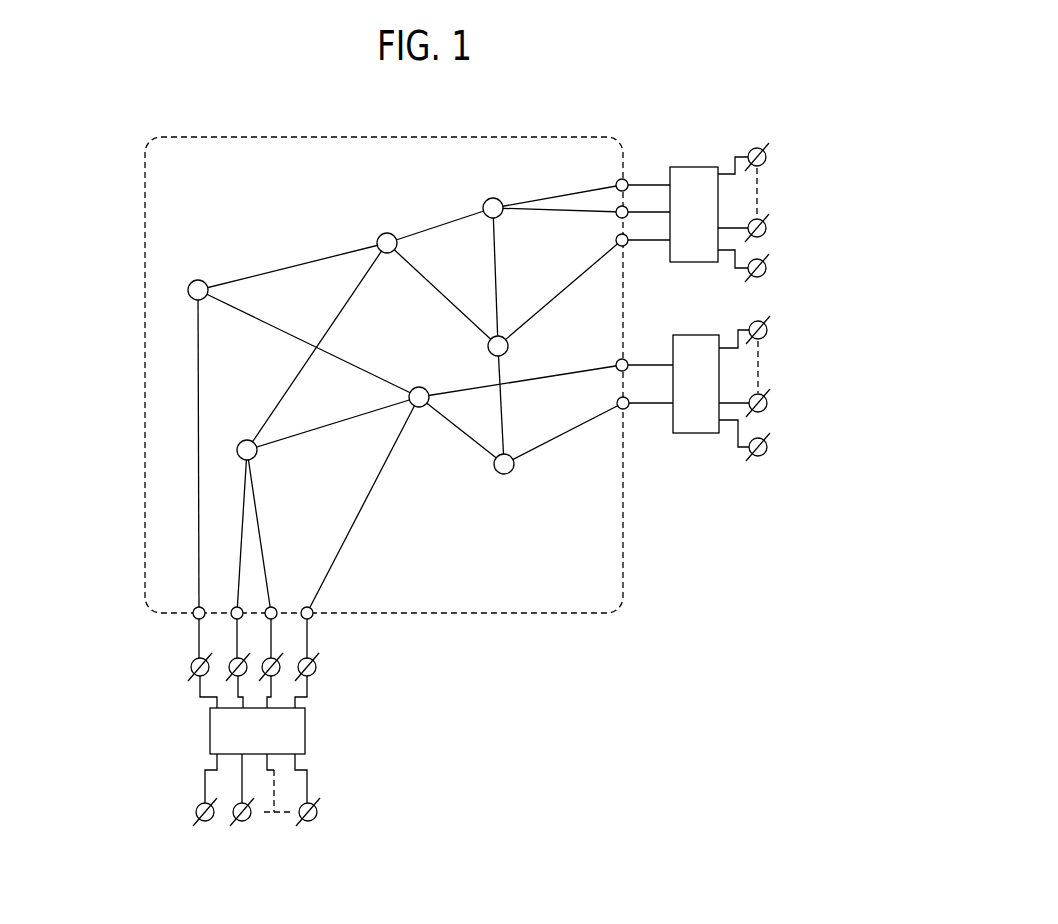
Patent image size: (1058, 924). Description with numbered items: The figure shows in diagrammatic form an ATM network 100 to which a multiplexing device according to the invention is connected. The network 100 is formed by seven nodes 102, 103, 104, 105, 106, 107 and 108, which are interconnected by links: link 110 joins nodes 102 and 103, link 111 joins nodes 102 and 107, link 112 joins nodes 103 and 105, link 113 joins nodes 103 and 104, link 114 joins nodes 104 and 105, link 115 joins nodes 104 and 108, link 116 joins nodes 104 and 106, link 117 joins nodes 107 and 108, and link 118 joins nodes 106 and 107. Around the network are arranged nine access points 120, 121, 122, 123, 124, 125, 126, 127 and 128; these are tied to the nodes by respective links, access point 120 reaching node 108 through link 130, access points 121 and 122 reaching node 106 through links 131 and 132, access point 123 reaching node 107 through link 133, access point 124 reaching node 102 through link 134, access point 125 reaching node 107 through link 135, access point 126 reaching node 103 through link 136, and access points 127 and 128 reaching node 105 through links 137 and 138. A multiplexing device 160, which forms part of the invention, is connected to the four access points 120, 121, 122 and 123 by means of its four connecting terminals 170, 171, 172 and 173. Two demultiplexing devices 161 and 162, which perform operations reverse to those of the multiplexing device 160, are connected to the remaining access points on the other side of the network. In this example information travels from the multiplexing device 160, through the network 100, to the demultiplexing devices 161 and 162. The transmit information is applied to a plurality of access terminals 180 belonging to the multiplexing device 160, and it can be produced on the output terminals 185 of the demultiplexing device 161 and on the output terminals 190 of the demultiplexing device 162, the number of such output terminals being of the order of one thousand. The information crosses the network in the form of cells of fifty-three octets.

The ATM network 100 is at (515, 613).
The node 102 is at (505, 474).
The node 103 is at (489, 348).
The node 104 is at (383, 235).
The node 105 is at (489, 200).
The node 106 is at (243, 441).
The node 107 is at (410, 392).
The node 108 is at (200, 281).
The link 110 is at (500, 411).
The link 111 is at (467, 437).
The link 112 is at (493, 277).
The link 113 is at (437, 291).
The link 114 is at (436, 227).
The link 115 is at (302, 264).
The link 116 is at (330, 330).
The link 117 is at (255, 320).
The link 118 is at (337, 425).
The access point 120 is at (199, 607).
The access point 121 is at (235, 607).
The access point 122 is at (268, 607).
The access point 123 is at (313, 610).
The access point 124 is at (628, 408).
The access point 125 is at (618, 358).
The access point 126 is at (627, 245).
The access point 127 is at (617, 216).
The access point 128 is at (625, 180).
The link 130 is at (195, 442).
The link 131 is at (241, 535).
The link 132 is at (262, 542).
The link 133 is at (367, 502).
The link 134 is at (545, 442).
The link 135 is at (555, 377).
The link 136 is at (563, 293).
The link 137 is at (587, 207).
The link 138 is at (528, 199).
The multiplexing device 160 is at (305, 725).
The demultiplexing device 161 is at (690, 433).
The demultiplexing device 162 is at (688, 167).
The connecting terminal 170 is at (192, 675).
The connecting terminal 171 is at (230, 658).
The connecting terminal 172 is at (282, 658).
The connecting terminal 173 is at (317, 667).
The access terminals 180 is at (350, 828).
The output terminals 185 is at (768, 327).
The output terminals 190 is at (765, 148).